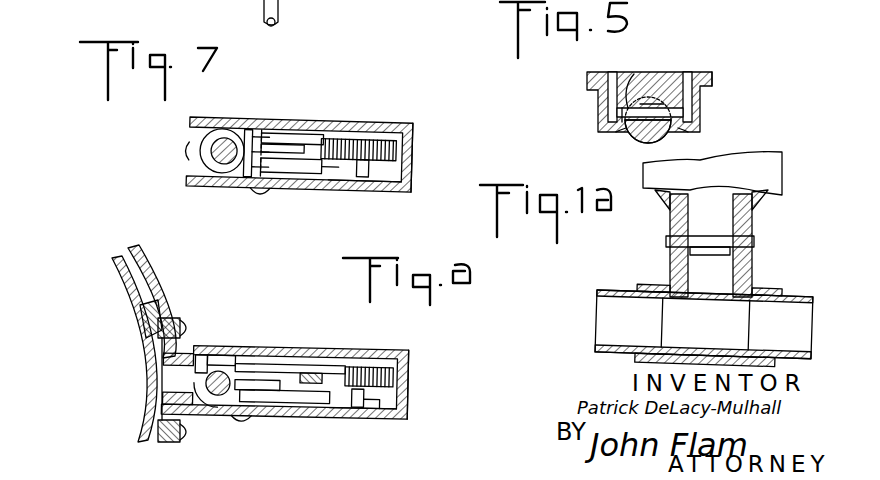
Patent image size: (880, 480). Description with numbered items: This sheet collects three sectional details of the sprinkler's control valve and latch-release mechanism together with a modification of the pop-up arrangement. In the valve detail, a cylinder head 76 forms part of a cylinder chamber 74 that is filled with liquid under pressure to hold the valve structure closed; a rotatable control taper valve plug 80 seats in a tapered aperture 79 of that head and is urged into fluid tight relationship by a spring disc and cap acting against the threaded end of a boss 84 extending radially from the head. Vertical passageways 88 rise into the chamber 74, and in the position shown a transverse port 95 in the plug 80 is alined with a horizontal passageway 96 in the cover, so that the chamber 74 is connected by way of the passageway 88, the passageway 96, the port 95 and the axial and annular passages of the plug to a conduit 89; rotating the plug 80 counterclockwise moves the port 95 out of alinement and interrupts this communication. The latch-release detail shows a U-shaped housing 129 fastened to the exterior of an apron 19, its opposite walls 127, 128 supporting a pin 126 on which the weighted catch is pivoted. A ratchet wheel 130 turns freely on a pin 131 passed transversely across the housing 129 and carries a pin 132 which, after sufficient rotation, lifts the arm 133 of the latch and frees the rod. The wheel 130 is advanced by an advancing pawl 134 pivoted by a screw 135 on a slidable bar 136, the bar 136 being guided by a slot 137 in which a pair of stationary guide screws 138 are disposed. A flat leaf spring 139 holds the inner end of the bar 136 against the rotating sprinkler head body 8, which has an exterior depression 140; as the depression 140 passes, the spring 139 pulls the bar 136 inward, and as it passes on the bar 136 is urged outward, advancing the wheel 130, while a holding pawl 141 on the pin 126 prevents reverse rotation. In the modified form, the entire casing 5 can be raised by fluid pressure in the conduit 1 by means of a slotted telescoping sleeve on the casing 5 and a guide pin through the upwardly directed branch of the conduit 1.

In FIG. 16, the conduit 1 is at (615, 312).
In FIG. 16, the casing 5 is at (784, 173).
In FIG. 6, the sprinkler head body 8 is at (110, 262).
In FIG. 6, the apron 19 is at (146, 252).
In FIG. 5, the cylinder chamber 74 is at (649, 91).
In FIG. 5, the cylinder head 76 is at (714, 90).
In FIG. 5, the tapered aperture 79 is at (668, 60).
In FIG. 5, the control taper valve plug 80 is at (636, 76).
In FIG. 5, the boss 84 is at (638, 138).
In FIG. 5, the vertical passageways 88 is at (608, 102).
In FIG. 7, the conduit 89 is at (279, 14).
In FIG. 5, the transverse port 95 is at (624, 72).
In FIG. 5, the horizontal passageway 96 is at (616, 128).
In FIG. 7, the pin 126 is at (240, 184).
In FIG. 6, the pin 126 is at (240, 419).
In FIG. 7, the wall 127 is at (208, 118).
In FIG. 6, the wall 127 is at (262, 350).
In FIG. 7, the wall 128 is at (372, 188).
In FIG. 6, the wall 128 is at (332, 416).
In FIG. 7, the U-shaped housing 129 is at (414, 130).
In FIG. 6, the U-shaped housing 129 is at (410, 357).
In FIG. 7, the ratchet wheel 130 is at (375, 134).
In FIG. 6, the ratchet wheel 130 is at (394, 378).
In FIG. 7, the pin 131 is at (344, 190).
In FIG. 6, the pin 131 is at (356, 404).
In FIG. 7, the pin 132 is at (362, 174).
In FIG. 6, the pin 132 is at (380, 400).
In FIG. 7, the arm 133 is at (300, 189).
In FIG. 6, the arm 133 is at (292, 418).
In FIG. 6, the advancing pawl 134 is at (332, 361).
In FIG. 6, the screw 135 is at (312, 358).
In FIG. 6, the slidable bar 136 is at (186, 360).
In FIG. 6, the slot 137 is at (228, 352).
In FIG. 6, the stationary guide screws 138 is at (192, 368).
In FIG. 7, the flat leaf spring 139 is at (190, 139).
In FIG. 6, the flat leaf spring 139 is at (200, 386).
In FIG. 6, the exterior depression 140 is at (152, 322).
In FIG. 7, the holding pawl 141 is at (305, 127).